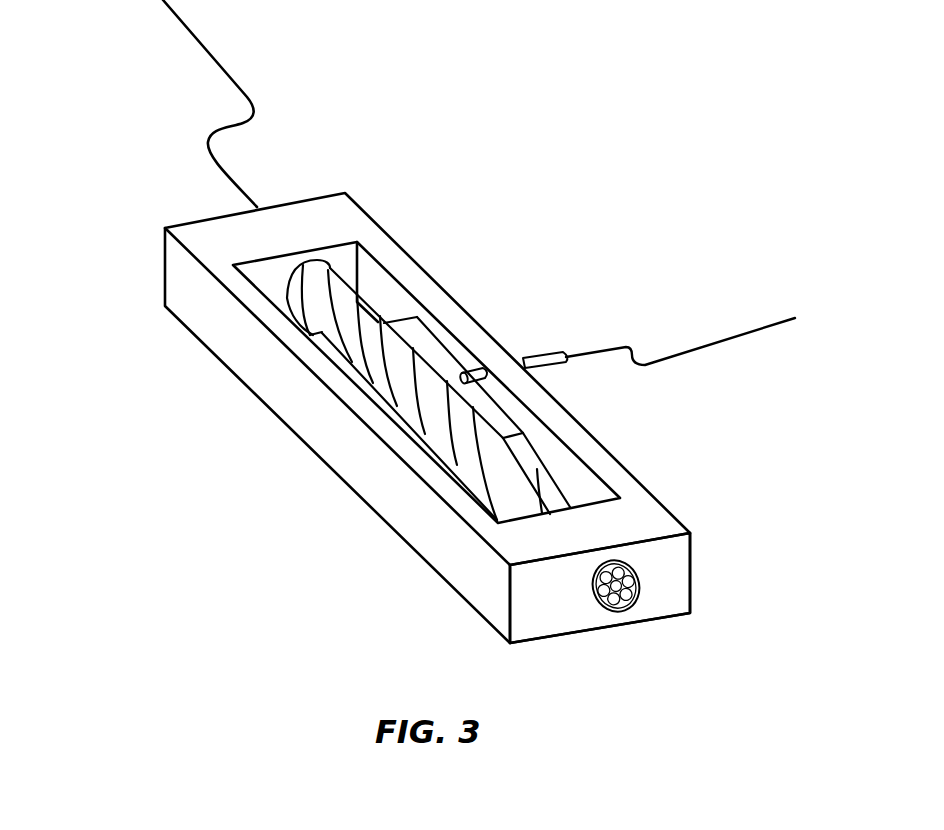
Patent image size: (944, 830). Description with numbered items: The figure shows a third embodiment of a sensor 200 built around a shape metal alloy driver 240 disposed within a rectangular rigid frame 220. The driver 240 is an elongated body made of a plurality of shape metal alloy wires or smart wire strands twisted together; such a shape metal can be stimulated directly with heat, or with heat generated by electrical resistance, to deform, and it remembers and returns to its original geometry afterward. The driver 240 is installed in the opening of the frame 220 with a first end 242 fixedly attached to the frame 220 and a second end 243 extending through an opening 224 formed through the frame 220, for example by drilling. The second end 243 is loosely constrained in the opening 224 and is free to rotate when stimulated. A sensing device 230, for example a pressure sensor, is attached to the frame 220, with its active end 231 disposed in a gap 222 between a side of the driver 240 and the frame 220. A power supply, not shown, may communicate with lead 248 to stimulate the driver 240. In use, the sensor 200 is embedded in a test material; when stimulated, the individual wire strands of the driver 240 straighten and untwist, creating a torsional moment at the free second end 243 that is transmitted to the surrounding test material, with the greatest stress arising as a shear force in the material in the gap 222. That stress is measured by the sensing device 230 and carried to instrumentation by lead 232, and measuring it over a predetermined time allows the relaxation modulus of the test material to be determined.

The sensor 200 is at (374, 161).
The frame 220 is at (343, 223).
The gap 222 is at (443, 355).
The opening 224 is at (638, 568).
The sensing device 230 is at (553, 369).
The active end 231 is at (478, 386).
The lead 232 is at (723, 342).
The shape metal alloy driver 240 is at (413, 382).
The first end 242 is at (287, 279).
The second end 243 is at (592, 593).
The lead 248 is at (214, 55).